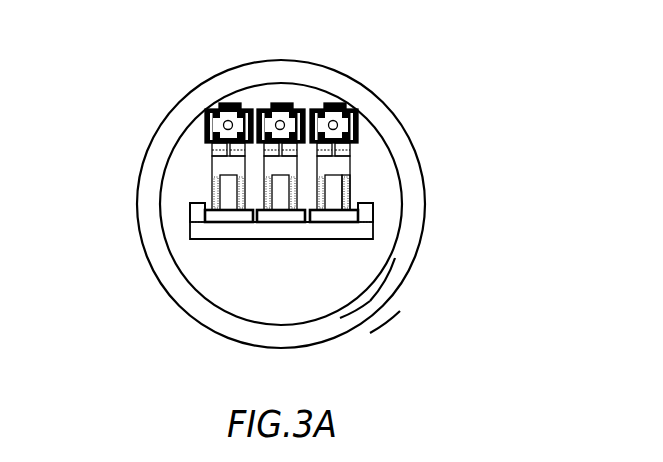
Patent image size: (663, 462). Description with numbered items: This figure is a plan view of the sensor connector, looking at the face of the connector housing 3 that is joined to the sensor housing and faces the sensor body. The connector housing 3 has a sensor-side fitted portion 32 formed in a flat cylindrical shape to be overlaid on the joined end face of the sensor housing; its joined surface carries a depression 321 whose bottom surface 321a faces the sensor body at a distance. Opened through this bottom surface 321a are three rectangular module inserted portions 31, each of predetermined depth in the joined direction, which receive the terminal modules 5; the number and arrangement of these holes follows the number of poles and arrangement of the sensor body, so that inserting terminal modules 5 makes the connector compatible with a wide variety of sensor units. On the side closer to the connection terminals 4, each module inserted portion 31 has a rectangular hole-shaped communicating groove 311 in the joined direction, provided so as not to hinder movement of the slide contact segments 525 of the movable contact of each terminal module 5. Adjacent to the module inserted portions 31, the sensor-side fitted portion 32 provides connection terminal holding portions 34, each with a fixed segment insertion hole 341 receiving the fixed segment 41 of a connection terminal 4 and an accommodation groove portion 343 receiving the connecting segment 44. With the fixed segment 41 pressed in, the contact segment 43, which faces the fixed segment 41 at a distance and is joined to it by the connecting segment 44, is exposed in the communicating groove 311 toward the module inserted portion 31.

The connector housing 3 is at (288, 215).
The module inserted portion 31 is at (360, 127).
The communicating groove 311 is at (410, 148).
The sensor-side fitted portion 32 is at (358, 152).
The depression 321 is at (390, 257).
The bottom surface 321a is at (376, 240).
The fixed segment insertion hole 341 is at (345, 290).
The accommodation groove portion 343 is at (350, 182).
The connection terminal holding portion 34 is at (306, 269).
The connection terminal 4 is at (305, 262).
The fixed segment 41 is at (211, 226).
The contact segment 43 is at (273, 165).
The connecting segment 44 is at (207, 215).
The terminal module 5 is at (298, 82).
The slide contact segment 525 is at (317, 104).